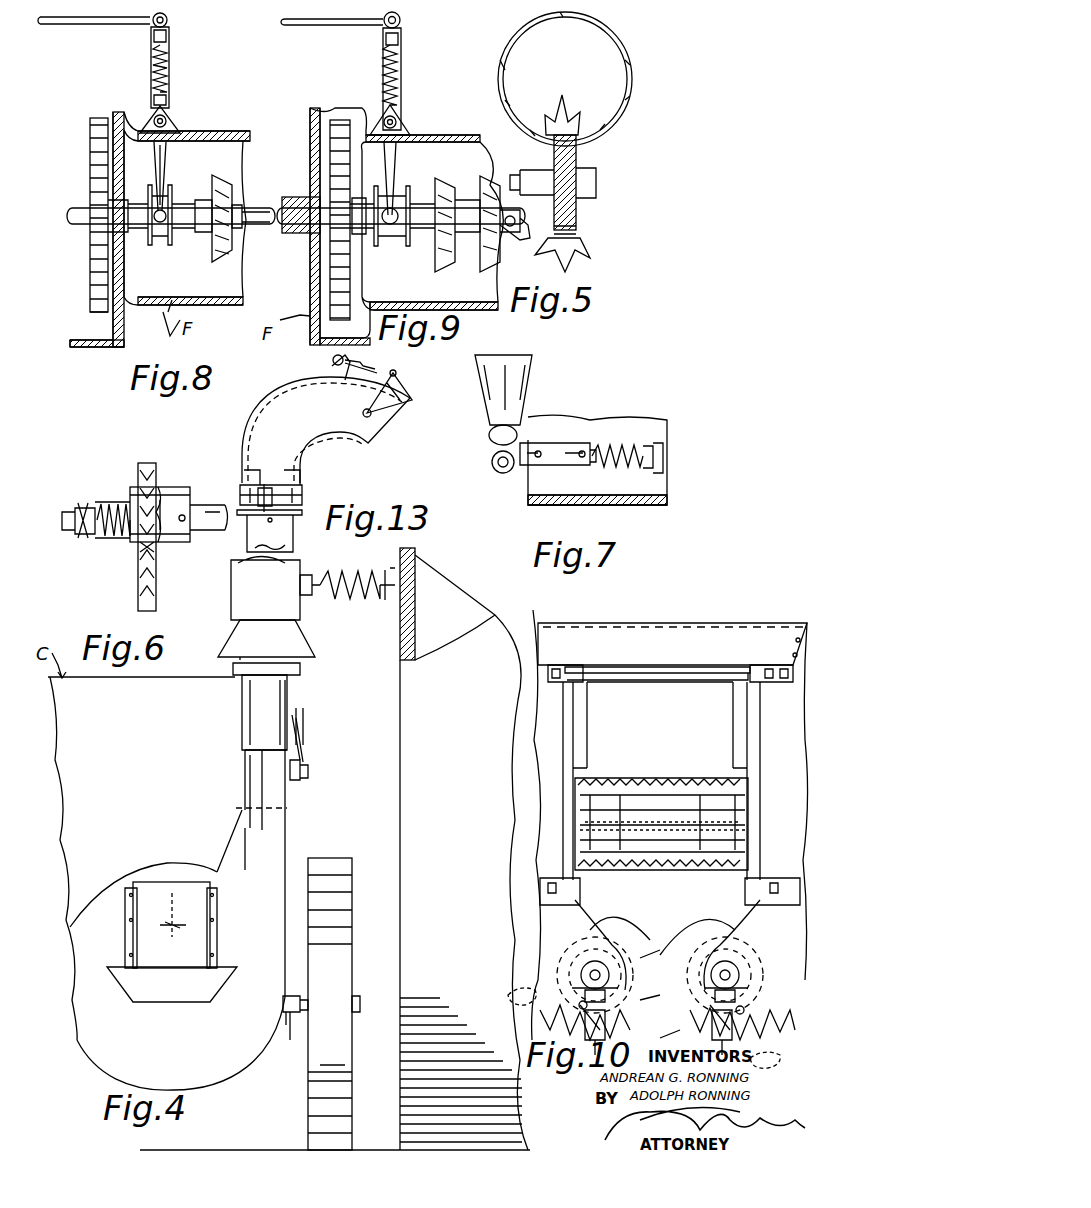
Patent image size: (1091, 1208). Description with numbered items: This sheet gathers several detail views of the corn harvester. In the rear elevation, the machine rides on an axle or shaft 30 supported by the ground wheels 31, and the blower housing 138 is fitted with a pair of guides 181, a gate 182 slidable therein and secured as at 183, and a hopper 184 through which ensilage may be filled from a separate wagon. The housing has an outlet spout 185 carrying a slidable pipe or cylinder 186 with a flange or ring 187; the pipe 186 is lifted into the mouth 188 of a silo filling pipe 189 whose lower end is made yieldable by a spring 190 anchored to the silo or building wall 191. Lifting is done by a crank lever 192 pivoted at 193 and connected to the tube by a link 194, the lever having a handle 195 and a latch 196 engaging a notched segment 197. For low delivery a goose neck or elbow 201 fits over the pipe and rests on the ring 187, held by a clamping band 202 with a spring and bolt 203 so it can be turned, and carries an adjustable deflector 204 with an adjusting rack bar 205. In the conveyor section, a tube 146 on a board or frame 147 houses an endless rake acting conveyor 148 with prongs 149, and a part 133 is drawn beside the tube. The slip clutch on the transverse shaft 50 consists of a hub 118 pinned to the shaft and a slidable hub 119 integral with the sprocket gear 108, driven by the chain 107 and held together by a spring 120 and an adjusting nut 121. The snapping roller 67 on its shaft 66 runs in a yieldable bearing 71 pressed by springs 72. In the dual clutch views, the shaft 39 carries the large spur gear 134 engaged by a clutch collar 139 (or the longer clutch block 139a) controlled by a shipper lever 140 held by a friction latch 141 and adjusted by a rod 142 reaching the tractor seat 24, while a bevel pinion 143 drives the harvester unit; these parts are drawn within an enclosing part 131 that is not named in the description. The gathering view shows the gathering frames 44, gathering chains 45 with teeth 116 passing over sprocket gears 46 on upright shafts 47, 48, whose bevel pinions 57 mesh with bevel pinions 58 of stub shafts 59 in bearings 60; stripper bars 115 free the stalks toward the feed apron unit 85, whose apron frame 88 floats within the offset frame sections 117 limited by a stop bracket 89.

In FIG. 4, the seat 24 is at (290, 1025).
In FIG. 4, the transversely extended axle or shaft 30 is at (360, 1003).
In FIG. 4, the ground wheels 31 is at (345, 962).
In FIG. 8, the shaft 39 is at (256, 226).
In FIG. 9, the shaft 39 is at (304, 225).
In FIG. 10, the gathering frames 44 is at (673, 1029).
In FIG. 10, the gathering chains 45 is at (608, 1020).
In FIG. 10, the sprocket gears 46 is at (560, 1000).
In FIG. 10, the upright shaft 47 is at (597, 958).
In FIG. 10, the upright shaft 48 is at (735, 968).
In FIG. 6, the transverse shaft 50 is at (208, 520).
In FIG. 10, the bevel pinions 57 is at (607, 990).
In FIG. 10, the bevel pinions 58 is at (700, 986).
In FIG. 10, the stub shafts 59 is at (580, 1018).
In FIG. 10, the bearings 60 is at (578, 1008).
In FIG. 7, the shaft 66 is at (504, 475).
In FIG. 7, the snapping roller 67 is at (513, 380).
In FIG. 7, the bearing 71 is at (553, 445).
In FIG. 7, the springs 72 is at (617, 445).
In FIG. 10, the feed apron unit 85 is at (645, 780).
In FIG. 10, the apron frame 88 is at (665, 826).
In FIG. 10, the stop bracket 89 is at (612, 668).
In FIG. 6, the chain 107 is at (138, 603).
In FIG. 6, the sprocket gear 108 is at (142, 568).
In FIG. 10, the stripper bars 115 is at (670, 935).
In FIG. 10, the teeth 116 is at (653, 1001).
In FIG. 10, the offset frame sections 117 is at (725, 712).
In FIG. 6, the hub 118 is at (182, 505).
In FIG. 6, the hub 119 is at (160, 498).
In FIG. 6, the spring 120 is at (100, 502).
In FIG. 6, the adjusting nut 121 is at (78, 510).
In FIG. 8, the housing 131 is at (232, 305).
In FIG. 9, the housing 131 is at (470, 302).
In FIG. 9, the bearing bracket 133 is at (522, 178).
In FIG. 5, the bearing bracket 133 is at (548, 171).
In FIG. 8, the spur gear 134 is at (95, 276).
In FIG. 9, the spur gear 134 is at (350, 282).
In FIG. 4, the blower housing 138 is at (224, 1066).
In FIG. 8, the clutch collar 139 is at (160, 238).
In FIG. 9, the clutch block 139a is at (420, 236).
In FIG. 8, the shipper lever 140 is at (168, 160).
In FIG. 9, the shipper lever 140 is at (400, 34).
In FIG. 8, the friction latch 141 is at (168, 100).
In FIG. 9, the friction latch 141 is at (400, 103).
In FIG. 8, the rod 142 is at (85, 24).
In FIG. 9, the rod 142 is at (338, 26).
In FIG. 8, the bevel pinion 143 is at (232, 178).
In FIG. 9, the bevel pinion 143 is at (450, 178).
In FIG. 5, the conveyor tube 146 is at (632, 88).
In FIG. 5, the board or frame 147 is at (576, 220).
In FIG. 5, the endless rake acting conveyor 148 is at (576, 230).
In FIG. 5, the prongs 149 is at (562, 108).
In FIG. 4, the guides 181 is at (214, 918).
In FIG. 4, the gate 182 is at (198, 888).
In FIG. 4, the securing means 183 is at (185, 927).
In FIG. 4, the hopper 184 is at (205, 985).
In FIG. 4, the outlet spout 185 is at (275, 820).
In FIG. 13, the pipe or cylinder 186 is at (280, 540).
In FIG. 4, the pipe or cylinder 186 is at (255, 700).
In FIG. 13, the flange or ring 187 is at (302, 512).
In FIG. 4, the flange or ring 187 is at (238, 668).
In FIG. 4, the mouth 188 is at (305, 642).
In FIG. 4, the silo filling pipe 189 is at (240, 606).
In FIG. 4, the spring 190 is at (352, 580).
In FIG. 4, the silo or building wall 191 is at (420, 602).
In FIG. 4, the crank lever 192 is at (300, 745).
In FIG. 4, the pivot 193 is at (310, 772).
In FIG. 4, the connecting link 194 is at (287, 735).
In FIG. 4, the handle 195 is at (302, 705).
In FIG. 4, the latch 196 is at (287, 760).
In FIG. 4, the notched segment 197 is at (287, 790).
In FIG. 13, the goose neck or elbow 201 is at (280, 412).
In FIG. 13, the clamping band 202 is at (302, 492).
In FIG. 13, the spring and bolt 203 is at (268, 484).
In FIG. 13, the adjustable deflector 204 is at (400, 404).
In FIG. 13, the adjusting rack bar 205 is at (333, 366).